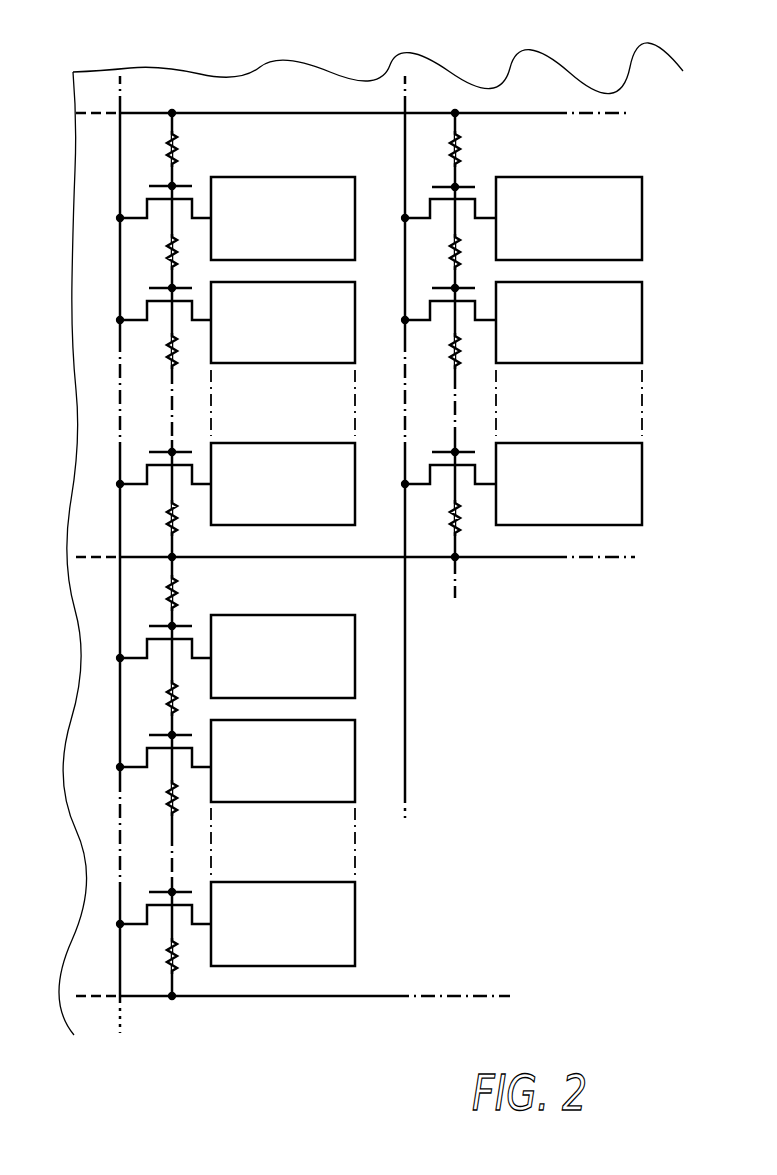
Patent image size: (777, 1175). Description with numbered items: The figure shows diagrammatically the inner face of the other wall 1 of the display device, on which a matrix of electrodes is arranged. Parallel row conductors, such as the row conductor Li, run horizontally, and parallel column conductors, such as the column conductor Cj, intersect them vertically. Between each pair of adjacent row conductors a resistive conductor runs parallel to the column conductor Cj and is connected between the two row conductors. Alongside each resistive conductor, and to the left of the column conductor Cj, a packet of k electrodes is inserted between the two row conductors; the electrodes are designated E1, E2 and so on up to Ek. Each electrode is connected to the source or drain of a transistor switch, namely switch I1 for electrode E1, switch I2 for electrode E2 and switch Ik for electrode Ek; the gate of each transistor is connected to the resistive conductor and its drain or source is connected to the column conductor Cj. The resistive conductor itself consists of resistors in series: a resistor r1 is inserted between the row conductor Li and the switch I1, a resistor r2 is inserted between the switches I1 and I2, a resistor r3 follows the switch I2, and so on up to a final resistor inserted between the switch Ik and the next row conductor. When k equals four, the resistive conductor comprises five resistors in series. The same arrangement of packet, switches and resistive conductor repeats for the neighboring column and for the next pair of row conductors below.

The wall 1 is at (82, 310).
The column conductor Cj is at (118, 98).
The row conductor Li is at (104, 118).
The resistor r1 is at (176, 150).
The resistor r2 is at (168, 250).
The resistor r3 is at (168, 355).
The switch I1 is at (162, 186).
The switch I2 is at (207, 276).
The switch Ik is at (162, 452).
The electrode E1 is at (426, 437).
The electrode E2 is at (426, 542).
The electrode Ek is at (426, 704).